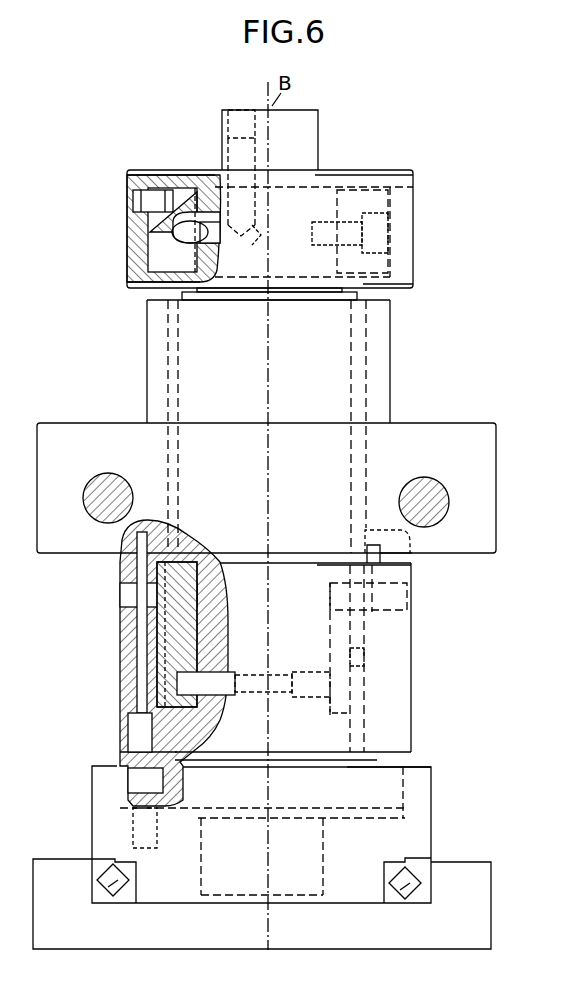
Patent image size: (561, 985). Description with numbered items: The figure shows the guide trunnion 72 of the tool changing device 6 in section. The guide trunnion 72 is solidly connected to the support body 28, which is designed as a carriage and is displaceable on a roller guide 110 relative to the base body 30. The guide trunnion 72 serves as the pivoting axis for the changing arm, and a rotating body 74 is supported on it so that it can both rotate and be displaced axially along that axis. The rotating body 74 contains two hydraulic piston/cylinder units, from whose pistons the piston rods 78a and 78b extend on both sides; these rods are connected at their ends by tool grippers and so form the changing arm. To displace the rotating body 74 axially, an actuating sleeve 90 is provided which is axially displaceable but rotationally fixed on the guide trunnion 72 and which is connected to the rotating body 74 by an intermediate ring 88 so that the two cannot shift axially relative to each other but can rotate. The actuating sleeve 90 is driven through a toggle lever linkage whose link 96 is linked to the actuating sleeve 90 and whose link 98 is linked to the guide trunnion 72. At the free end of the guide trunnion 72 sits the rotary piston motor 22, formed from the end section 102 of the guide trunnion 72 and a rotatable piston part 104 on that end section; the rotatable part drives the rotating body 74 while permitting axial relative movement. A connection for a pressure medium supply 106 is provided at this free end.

The tool changing device 6 is at (480, 260).
The rotary piston motor 22 is at (415, 170).
The pressure medium supply connection 106 is at (245, 130).
The end section of the guide trunnion 102 is at (320, 196).
The rotatable piston part 104 is at (130, 224).
The rotating body 74 is at (457, 446).
The piston rod 78a is at (98, 492).
The piston rod 78b is at (432, 492).
The intermediate ring 88 is at (400, 563).
The actuating sleeve 90 is at (392, 686).
The link 96 is at (156, 630).
The link 98 is at (180, 664).
The guide trunnion 72 is at (145, 737).
The support body 28 is at (413, 819).
The base body 30 is at (478, 900).
The roller guide 110 is at (108, 894).